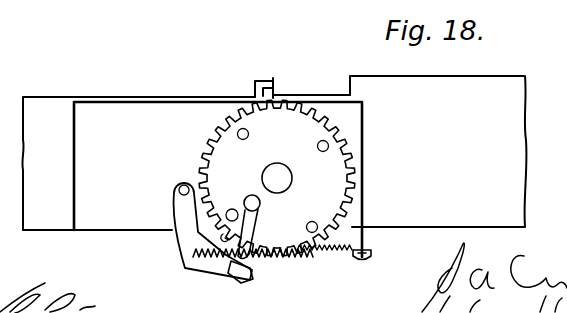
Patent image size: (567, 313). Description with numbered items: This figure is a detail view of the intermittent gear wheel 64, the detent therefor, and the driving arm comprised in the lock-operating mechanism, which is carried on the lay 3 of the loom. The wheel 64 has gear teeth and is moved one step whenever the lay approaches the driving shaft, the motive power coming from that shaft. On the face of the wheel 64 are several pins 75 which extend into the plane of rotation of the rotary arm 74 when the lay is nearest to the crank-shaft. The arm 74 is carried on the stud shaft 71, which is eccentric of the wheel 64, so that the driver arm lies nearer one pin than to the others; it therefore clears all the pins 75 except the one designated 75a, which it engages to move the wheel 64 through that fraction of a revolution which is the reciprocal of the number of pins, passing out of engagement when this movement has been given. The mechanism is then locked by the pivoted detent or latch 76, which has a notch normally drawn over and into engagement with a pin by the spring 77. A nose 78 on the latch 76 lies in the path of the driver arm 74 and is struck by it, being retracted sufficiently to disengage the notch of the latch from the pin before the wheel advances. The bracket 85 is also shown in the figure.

The lay 3 is at (438, 151).
The intermittently moved wheel 64 is at (333, 163).
The bracket 85 is at (274, 79).
The pins 75 is at (314, 222).
The pin 75a is at (232, 209).
The stud shaft 71 is at (260, 207).
The rotary arm 74 is at (255, 258).
The pivoted detent 76 is at (182, 249).
The spring 77 is at (336, 257).
The nose 78 is at (237, 278).